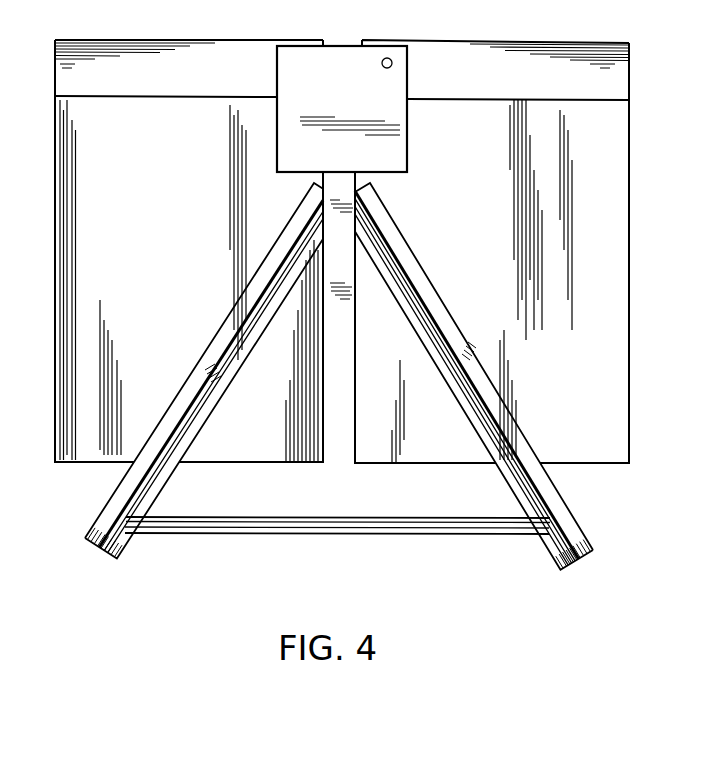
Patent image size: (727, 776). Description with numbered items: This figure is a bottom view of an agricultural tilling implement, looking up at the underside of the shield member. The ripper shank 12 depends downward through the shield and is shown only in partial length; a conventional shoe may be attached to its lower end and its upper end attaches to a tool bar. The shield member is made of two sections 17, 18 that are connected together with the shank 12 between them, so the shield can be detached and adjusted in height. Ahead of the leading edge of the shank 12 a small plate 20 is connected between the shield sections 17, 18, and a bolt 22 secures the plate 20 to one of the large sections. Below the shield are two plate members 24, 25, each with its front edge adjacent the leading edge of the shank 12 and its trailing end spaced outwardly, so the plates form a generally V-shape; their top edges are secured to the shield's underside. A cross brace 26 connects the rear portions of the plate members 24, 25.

The shank 12 is at (340, 323).
The shield section 17 is at (77, 139).
The shield section 18 is at (565, 183).
The plate 20 is at (296, 65).
The bolt 22 is at (389, 58).
The plate member 24 is at (565, 509).
The plate member 25 is at (133, 483).
The cross brace 26 is at (453, 533).